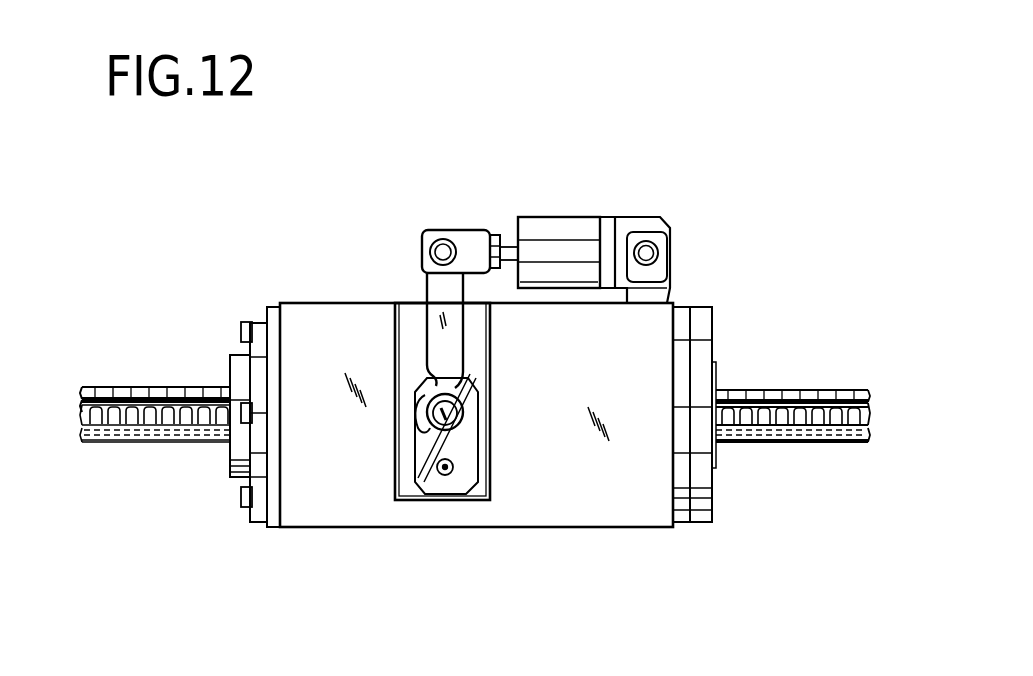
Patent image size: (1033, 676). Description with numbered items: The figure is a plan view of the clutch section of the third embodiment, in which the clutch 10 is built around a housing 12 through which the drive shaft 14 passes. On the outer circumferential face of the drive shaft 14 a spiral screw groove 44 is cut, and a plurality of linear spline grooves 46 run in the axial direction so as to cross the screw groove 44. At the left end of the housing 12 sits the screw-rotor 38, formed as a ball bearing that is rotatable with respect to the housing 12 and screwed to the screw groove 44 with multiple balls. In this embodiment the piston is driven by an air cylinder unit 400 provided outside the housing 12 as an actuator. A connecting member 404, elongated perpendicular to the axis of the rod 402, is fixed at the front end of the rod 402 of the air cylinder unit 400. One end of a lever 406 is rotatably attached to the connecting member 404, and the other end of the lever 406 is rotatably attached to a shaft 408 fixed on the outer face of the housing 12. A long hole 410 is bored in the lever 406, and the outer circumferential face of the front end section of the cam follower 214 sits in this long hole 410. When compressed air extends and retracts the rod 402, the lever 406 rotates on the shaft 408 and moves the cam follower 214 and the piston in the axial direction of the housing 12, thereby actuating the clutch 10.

The clutch 10 is at (649, 530).
The housing 12 is at (337, 515).
The drive shaft 14 is at (828, 390).
The screw-rotor 38 is at (232, 476).
The screw groove 44 is at (100, 444).
The spline grooves 46 is at (145, 396).
The cam follower 214 is at (453, 412).
The air cylinder unit 400 is at (575, 217).
The rod 402 is at (511, 247).
The connecting member 404 is at (425, 233).
The lever 406 is at (418, 328).
The shaft 408 is at (445, 476).
The long hole 410 is at (468, 433).